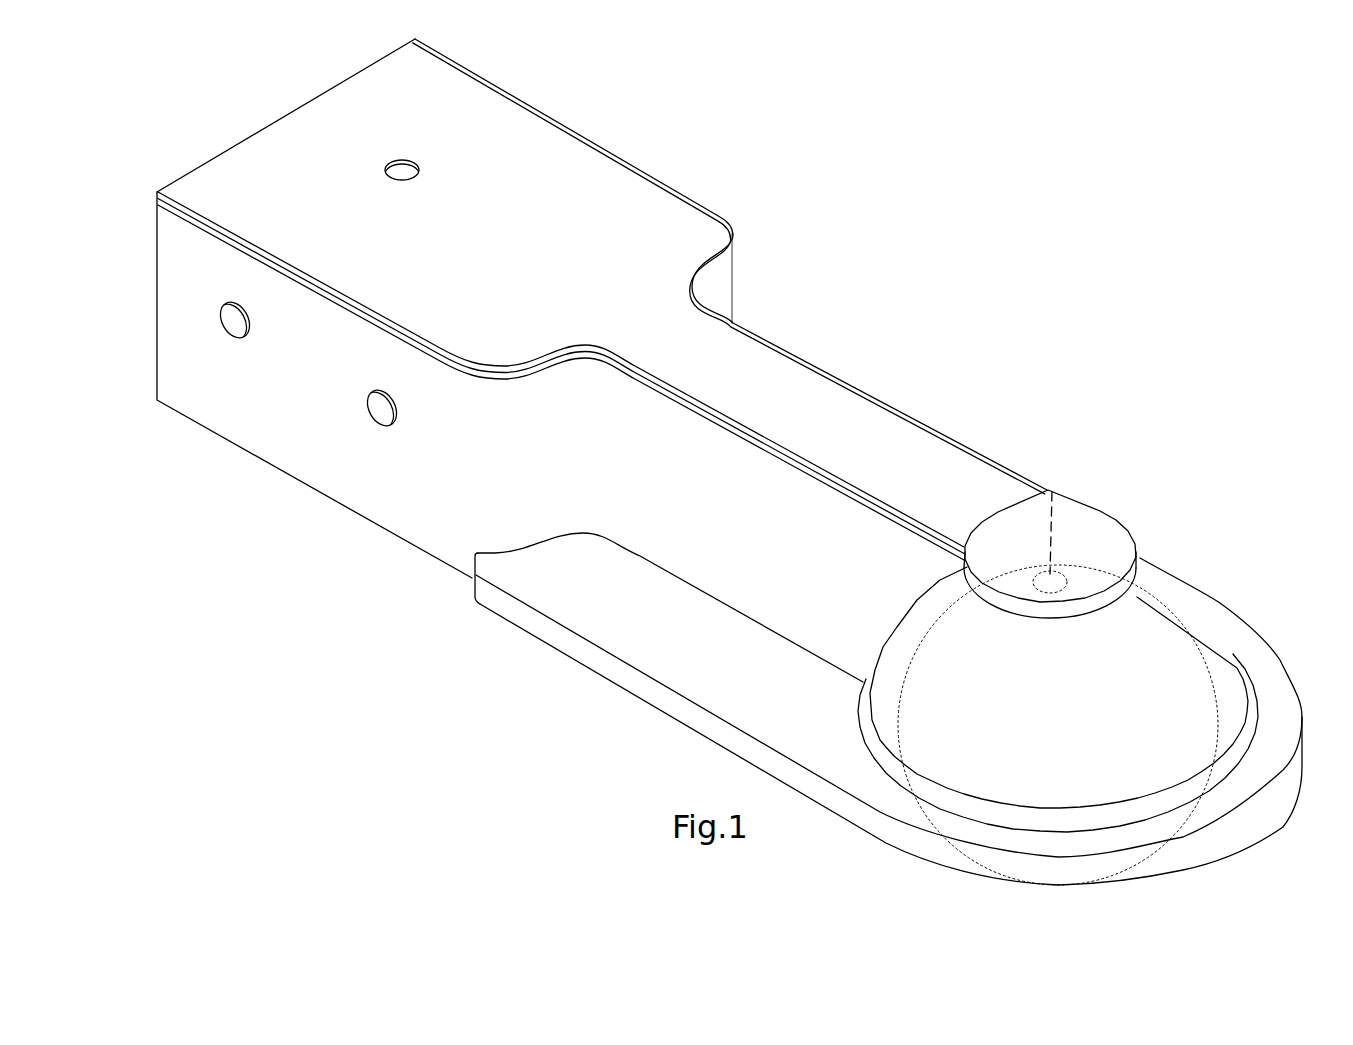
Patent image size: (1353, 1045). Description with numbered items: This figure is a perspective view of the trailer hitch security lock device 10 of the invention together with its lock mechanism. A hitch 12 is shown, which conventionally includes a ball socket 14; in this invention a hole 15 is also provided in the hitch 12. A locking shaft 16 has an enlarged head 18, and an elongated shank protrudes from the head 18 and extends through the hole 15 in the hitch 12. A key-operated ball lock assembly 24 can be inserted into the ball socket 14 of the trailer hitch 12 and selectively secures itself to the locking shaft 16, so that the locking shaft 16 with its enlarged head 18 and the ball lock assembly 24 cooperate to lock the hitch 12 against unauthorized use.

The trailer hitch security lock device 10 is at (1077, 468).
The hitch 12 is at (848, 388).
The ball socket 14 is at (1163, 582).
The hole 15 is at (1053, 490).
The locking shaft 16 is at (1110, 482).
The enlarged head 18 is at (1108, 528).
The key-operated ball lock assembly 24 is at (1188, 633).